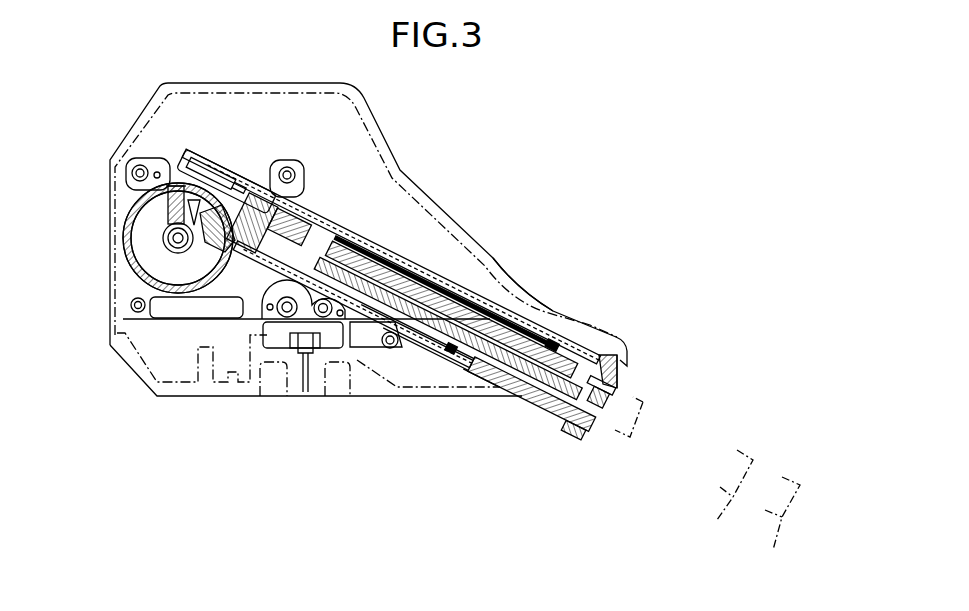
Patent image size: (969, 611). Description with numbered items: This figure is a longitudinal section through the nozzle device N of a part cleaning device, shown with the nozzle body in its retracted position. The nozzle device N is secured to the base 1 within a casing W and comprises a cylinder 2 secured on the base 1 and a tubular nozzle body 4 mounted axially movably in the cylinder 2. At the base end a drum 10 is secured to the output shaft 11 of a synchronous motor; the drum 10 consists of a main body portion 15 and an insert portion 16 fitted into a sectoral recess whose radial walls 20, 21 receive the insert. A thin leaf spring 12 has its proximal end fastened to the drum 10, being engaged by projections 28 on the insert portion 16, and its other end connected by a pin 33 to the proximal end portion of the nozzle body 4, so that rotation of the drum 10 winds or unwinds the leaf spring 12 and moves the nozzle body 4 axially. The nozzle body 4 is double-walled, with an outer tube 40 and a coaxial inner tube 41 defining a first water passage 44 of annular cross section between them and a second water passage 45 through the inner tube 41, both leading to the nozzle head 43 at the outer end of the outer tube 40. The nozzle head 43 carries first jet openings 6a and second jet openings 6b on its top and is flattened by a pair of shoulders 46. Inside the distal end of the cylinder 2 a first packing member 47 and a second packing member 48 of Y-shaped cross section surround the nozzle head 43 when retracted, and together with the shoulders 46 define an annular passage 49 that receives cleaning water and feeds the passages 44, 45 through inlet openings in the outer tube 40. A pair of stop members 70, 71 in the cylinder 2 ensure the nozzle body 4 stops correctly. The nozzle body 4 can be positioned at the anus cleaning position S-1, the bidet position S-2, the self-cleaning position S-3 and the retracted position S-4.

The base 1 is at (138, 378).
The cylinder 2 is at (360, 240).
The nozzle body 4 is at (480, 360).
The first jet openings 6a is at (580, 363).
The second jet openings 6b is at (613, 383).
The drum 10 is at (187, 292).
The output shaft 11 is at (163, 240).
The leaf spring 12 is at (217, 203).
The main body portion 15 is at (153, 258).
The insert portion 16 is at (197, 217).
The radial wall 20 is at (178, 238).
The radial wall 21 is at (170, 200).
The projections 28 is at (233, 265).
The pin 33 is at (293, 227).
The outer tube 40 is at (445, 360).
The inner tube 41 is at (457, 297).
The nozzle head 43 is at (600, 422).
The first water passage 44 is at (457, 353).
The second water passage 45 is at (387, 290).
The shoulders 46 is at (553, 347).
The first packing member 47 is at (507, 377).
The second packing member 48 is at (573, 423).
The annular passage 49 is at (548, 400).
The stop member 70 is at (237, 183).
The stop member 71 is at (487, 380).
The nozzle device N is at (450, 270).
The casing W is at (378, 143).
The anus cleaning position S-1 is at (720, 500).
The bidet position S-2 is at (777, 527).
The self-cleaning position S-3 is at (643, 402).
The retracted position S-4 is at (618, 377).